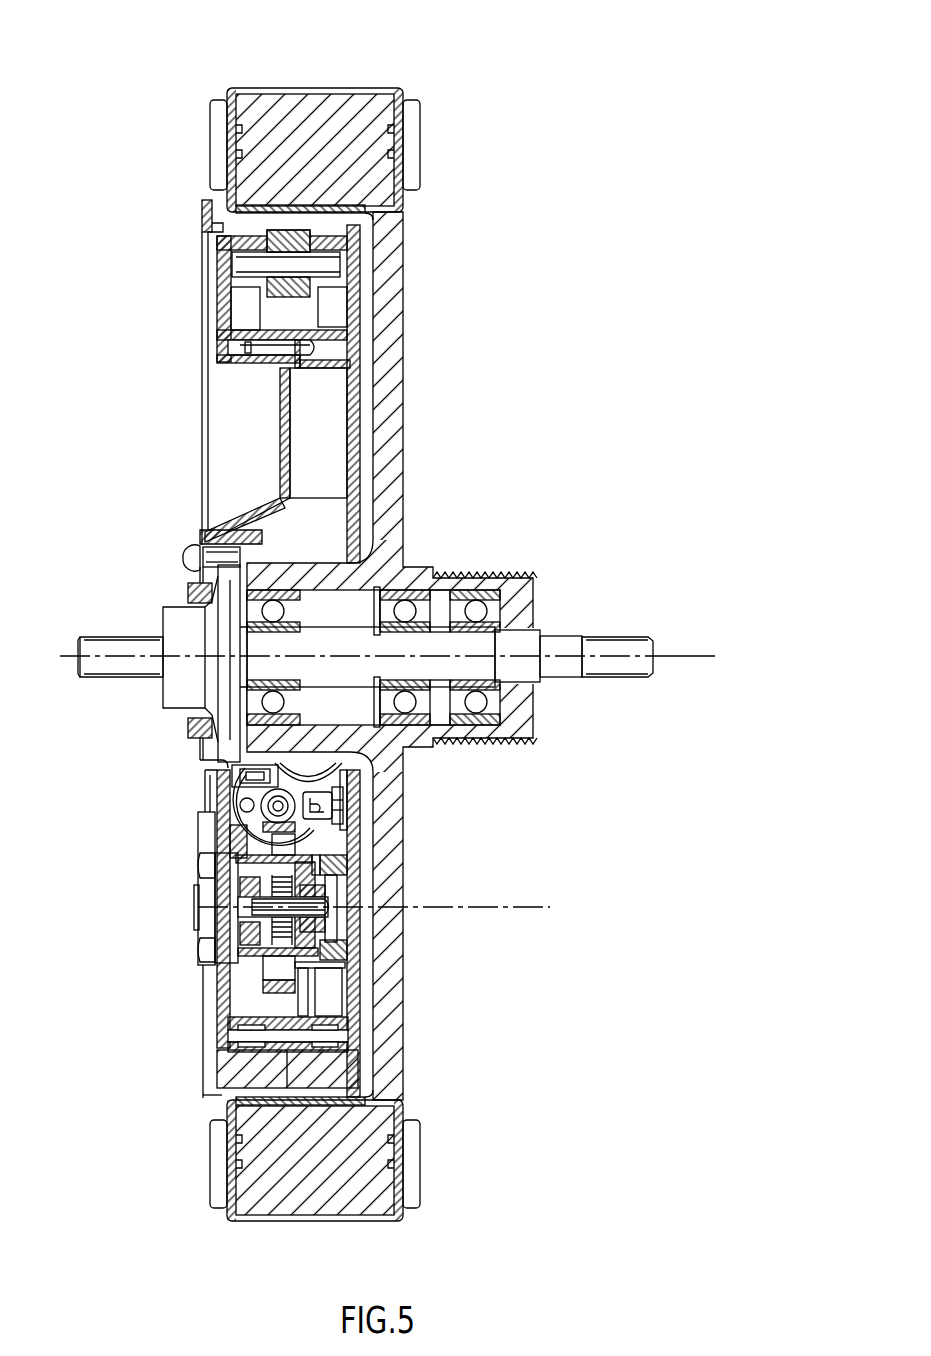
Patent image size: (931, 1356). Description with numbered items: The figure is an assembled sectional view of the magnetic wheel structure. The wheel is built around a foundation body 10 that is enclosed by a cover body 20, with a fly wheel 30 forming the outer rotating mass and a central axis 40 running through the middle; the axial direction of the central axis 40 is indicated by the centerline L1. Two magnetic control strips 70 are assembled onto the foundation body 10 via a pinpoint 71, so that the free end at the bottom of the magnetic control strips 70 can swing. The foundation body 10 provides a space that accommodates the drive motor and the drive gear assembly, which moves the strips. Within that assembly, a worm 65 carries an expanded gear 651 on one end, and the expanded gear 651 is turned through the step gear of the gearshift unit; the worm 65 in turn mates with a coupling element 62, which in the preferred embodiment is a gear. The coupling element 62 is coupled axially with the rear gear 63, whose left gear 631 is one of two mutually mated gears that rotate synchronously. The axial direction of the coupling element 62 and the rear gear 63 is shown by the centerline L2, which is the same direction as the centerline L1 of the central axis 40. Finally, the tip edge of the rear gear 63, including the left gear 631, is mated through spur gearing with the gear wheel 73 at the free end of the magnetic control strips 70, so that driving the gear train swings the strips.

The foundation body 10 is at (218, 275).
The cover body 20 is at (357, 270).
The fly wheel 30 is at (318, 88).
The central axis 40 is at (567, 632).
The coupling element 62 is at (235, 830).
The rear gear 63 is at (337, 957).
The worm 65 is at (340, 783).
The magnetic control strips 70 is at (246, 298).
The pinpoint 71 is at (283, 232).
The gear wheel 73 is at (307, 973).
The left gear 631 is at (273, 973).
The expanded gear 651 is at (323, 837).
The centerline of central axis L1 is at (695, 657).
The centerline of coupling element and rear gear L2 is at (535, 907).